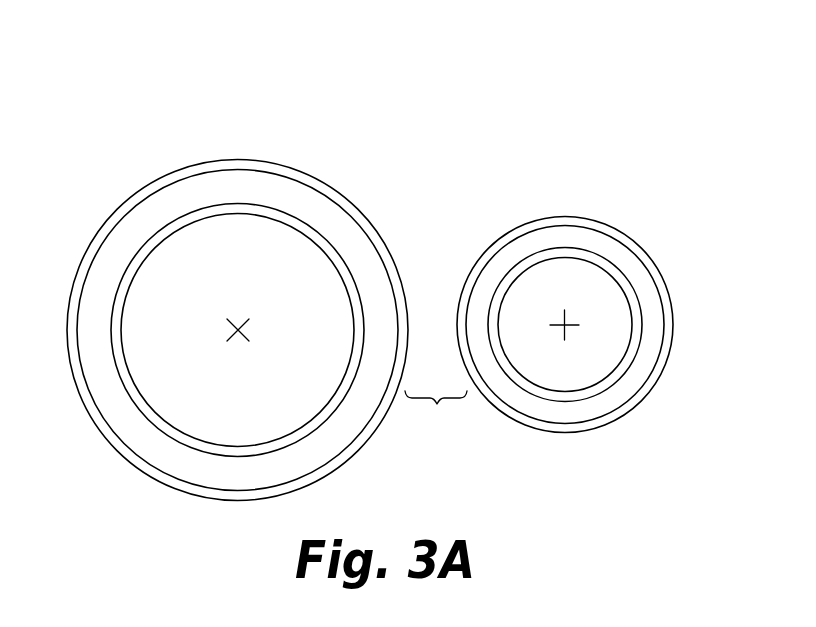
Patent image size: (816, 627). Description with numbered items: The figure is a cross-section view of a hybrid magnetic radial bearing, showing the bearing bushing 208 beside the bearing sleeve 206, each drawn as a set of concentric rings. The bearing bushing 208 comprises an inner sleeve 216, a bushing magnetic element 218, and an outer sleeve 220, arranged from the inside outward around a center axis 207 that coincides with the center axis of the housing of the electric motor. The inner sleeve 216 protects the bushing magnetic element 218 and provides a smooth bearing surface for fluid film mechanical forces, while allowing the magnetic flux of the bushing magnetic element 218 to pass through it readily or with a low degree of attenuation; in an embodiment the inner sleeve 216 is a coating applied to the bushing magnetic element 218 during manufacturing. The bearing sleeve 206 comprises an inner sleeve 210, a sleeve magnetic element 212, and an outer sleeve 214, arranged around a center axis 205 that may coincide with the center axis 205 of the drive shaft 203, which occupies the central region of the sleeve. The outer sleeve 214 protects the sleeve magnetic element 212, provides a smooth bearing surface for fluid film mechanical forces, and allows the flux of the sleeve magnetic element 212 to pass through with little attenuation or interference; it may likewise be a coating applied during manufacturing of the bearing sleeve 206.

The bearing bushing 208 is at (319, 148).
The bearing sleeve 206 is at (625, 207).
The center axis 207 is at (237, 318).
The center axis 205 is at (560, 320).
The inner sleeve 216 is at (313, 428).
The bushing magnetic element 218 is at (123, 418).
The outer sleeve 220 is at (178, 483).
The inner sleeve 210 is at (518, 380).
The sleeve magnetic element 212 is at (570, 410).
The drive shaft 203 is at (592, 360).
The outer sleeve 214 is at (655, 372).